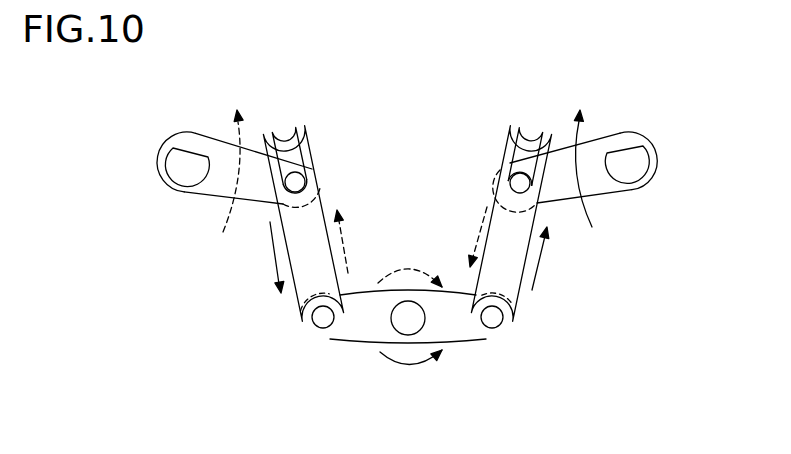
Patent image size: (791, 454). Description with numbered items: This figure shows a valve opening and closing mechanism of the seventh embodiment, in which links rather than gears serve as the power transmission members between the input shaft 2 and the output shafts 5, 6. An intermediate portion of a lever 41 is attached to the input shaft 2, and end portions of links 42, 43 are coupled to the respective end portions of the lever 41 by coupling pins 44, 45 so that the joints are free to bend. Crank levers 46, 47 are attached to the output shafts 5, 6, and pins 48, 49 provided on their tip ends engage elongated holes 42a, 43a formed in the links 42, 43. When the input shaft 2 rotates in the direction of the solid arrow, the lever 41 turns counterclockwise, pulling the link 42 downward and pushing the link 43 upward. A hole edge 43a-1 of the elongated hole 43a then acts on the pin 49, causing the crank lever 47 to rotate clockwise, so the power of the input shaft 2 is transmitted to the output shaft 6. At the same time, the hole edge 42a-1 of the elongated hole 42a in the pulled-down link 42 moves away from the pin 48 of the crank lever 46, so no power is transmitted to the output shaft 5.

The input shaft 2 is at (408, 336).
The output shaft 5 is at (177, 176).
The output shaft 6 is at (636, 181).
The lever 41 is at (458, 335).
The link 42 is at (306, 286).
The elongated hole 42a is at (290, 128).
The hole edge 42a-1 is at (313, 191).
The link 43 is at (510, 282).
The elongated hole 43a is at (533, 123).
The hole edge 43a-1 is at (538, 204).
The coupling pin 44 is at (314, 330).
The coupling pin 45 is at (500, 325).
The crank lever 46 is at (210, 143).
The crank lever 47 is at (620, 138).
The pin 48 is at (300, 178).
The pin 49 is at (515, 184).